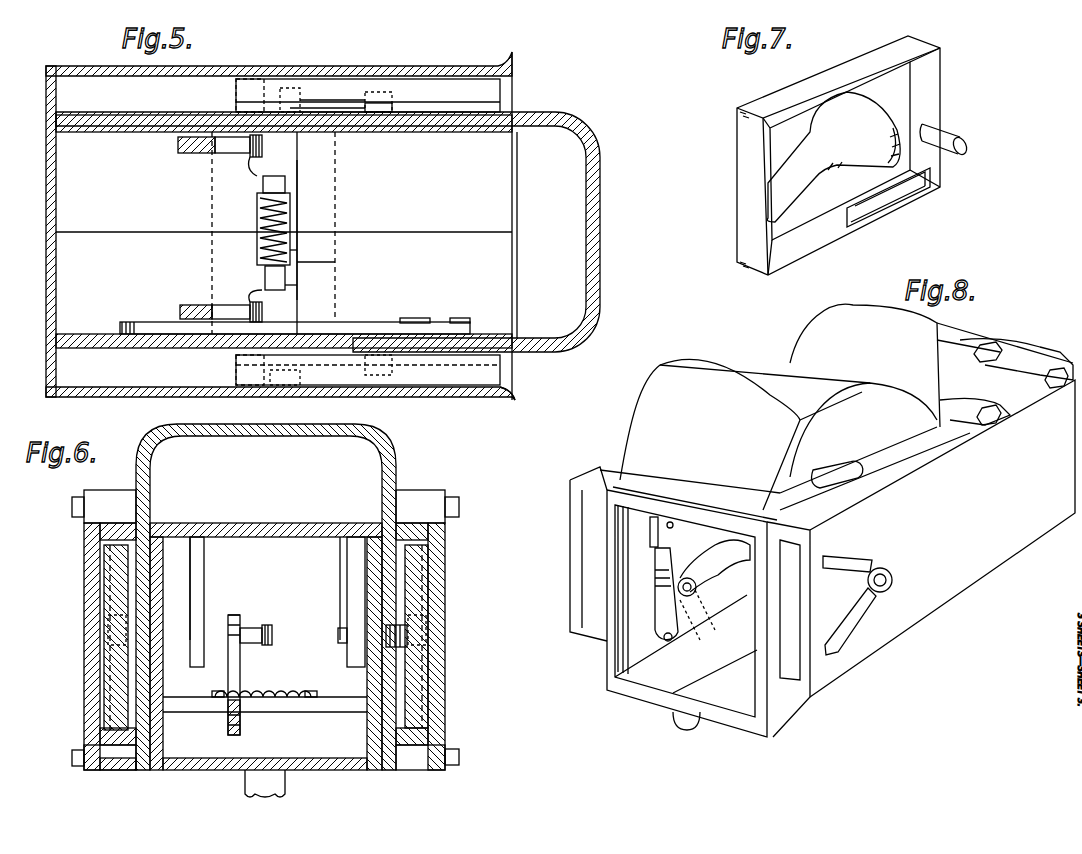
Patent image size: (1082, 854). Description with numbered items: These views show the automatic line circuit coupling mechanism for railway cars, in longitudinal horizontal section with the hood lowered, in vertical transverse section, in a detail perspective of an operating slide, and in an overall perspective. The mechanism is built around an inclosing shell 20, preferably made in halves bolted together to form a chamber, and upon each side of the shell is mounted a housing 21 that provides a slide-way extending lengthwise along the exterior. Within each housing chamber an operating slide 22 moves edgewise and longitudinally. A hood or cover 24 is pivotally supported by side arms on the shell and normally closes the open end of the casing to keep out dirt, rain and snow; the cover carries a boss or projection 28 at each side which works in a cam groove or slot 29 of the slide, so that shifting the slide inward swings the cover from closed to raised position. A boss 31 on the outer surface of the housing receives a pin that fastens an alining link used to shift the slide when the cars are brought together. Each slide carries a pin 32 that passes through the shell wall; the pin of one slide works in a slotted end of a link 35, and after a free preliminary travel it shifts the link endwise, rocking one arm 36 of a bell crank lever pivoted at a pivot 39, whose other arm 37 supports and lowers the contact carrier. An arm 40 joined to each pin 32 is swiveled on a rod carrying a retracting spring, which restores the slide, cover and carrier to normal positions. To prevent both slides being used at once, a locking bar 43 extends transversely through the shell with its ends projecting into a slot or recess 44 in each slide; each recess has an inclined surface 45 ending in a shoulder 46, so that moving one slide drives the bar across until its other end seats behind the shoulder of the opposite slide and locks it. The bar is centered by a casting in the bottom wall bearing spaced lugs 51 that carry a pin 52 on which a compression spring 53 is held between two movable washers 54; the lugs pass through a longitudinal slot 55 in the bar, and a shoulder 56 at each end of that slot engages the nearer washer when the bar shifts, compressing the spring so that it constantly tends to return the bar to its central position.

In FIG. 5, the shell 20 is at (48, 240).
In FIG. 6, the shell 20 is at (250, 770).
In FIG. 8, the shell 20 is at (580, 600).
In FIG. 5, the housing 21 is at (380, 66).
In FIG. 6, the housing 21 is at (86, 604).
In FIG. 8, the housing 21 is at (606, 592).
In FIG. 5, the operating slide 22 is at (500, 92).
In FIG. 6, the operating slide 22 is at (108, 562).
In FIG. 7, the operating slide 22 is at (737, 160).
In FIG. 8, the operating slide 22 is at (785, 473).
In FIG. 5, the hood or cover 24 is at (600, 168).
In FIG. 6, the hood or cover 24 is at (397, 470).
In FIG. 8, the hood or cover 24 is at (846, 407).
In FIG. 5, the boss or projection 28 is at (393, 110).
In FIG. 6, the boss or projection 28 is at (206, 612).
In FIG. 5, the cam groove or slot 29 is at (493, 397).
In FIG. 6, the cam groove or slot 29 is at (112, 588).
In FIG. 7, the cam groove or slot 29 is at (833, 157).
In FIG. 8, the boss 31 is at (892, 580).
In FIG. 5, the pin 32 is at (250, 157).
In FIG. 6, the pin 32 is at (222, 637).
In FIG. 7, the pin 32 is at (960, 135).
In FIG. 5, the link 35 is at (385, 322).
In FIG. 6, the link 35 is at (180, 652).
In FIG. 8, the link 35 is at (738, 602).
In FIG. 8, the bell crank lever arm 36 is at (650, 708).
In FIG. 8, the bell crank lever arm 37 is at (690, 578).
In FIG. 8, the pivot 39 is at (656, 590).
In FIG. 5, the arm 40 is at (196, 153).
In FIG. 6, the arm 40 is at (192, 563).
In FIG. 5, the locking bar 43 is at (298, 282).
In FIG. 6, the locking bar 43 is at (338, 713).
In FIG. 5, the slot or recess 44 is at (270, 88).
In FIG. 7, the slot or recess 44 is at (932, 192).
In FIG. 5, the inclined surface 45 is at (313, 96).
In FIG. 7, the inclined surface 45 is at (873, 217).
In FIG. 5, the shoulder 46 is at (294, 92).
In FIG. 7, the shoulder 46 is at (905, 200).
In FIG. 5, the lug 51 is at (298, 180).
In FIG. 6, the lug 51 is at (300, 690).
In FIG. 5, the pin 52 is at (291, 222).
In FIG. 5, the spring 53 is at (291, 250).
In FIG. 5, the washer 54 is at (336, 262).
In FIG. 5, the slot 55 is at (286, 285).
In FIG. 5, the shoulder 56 is at (286, 190).